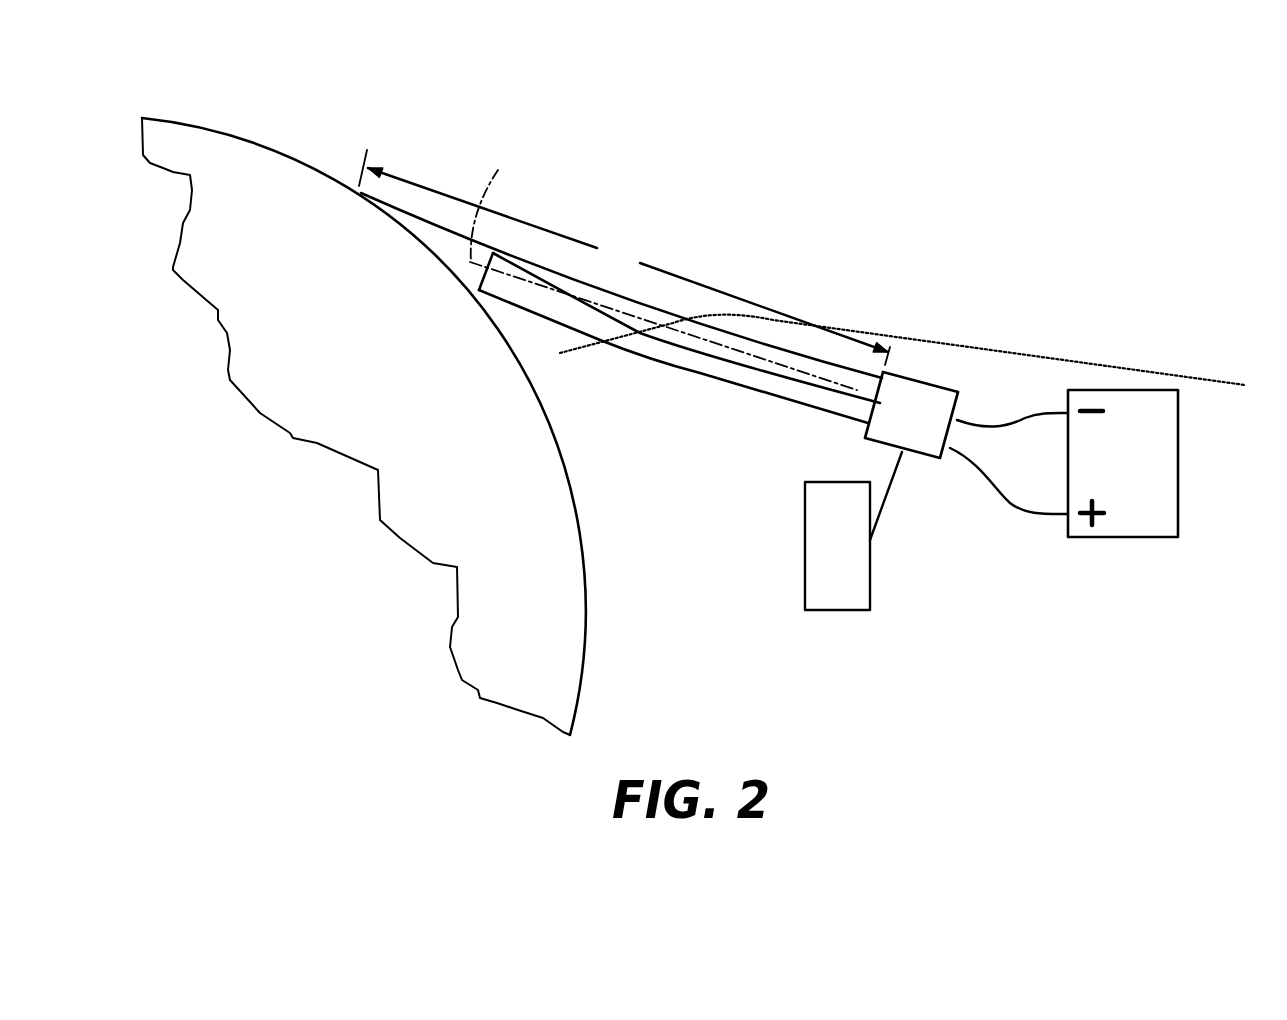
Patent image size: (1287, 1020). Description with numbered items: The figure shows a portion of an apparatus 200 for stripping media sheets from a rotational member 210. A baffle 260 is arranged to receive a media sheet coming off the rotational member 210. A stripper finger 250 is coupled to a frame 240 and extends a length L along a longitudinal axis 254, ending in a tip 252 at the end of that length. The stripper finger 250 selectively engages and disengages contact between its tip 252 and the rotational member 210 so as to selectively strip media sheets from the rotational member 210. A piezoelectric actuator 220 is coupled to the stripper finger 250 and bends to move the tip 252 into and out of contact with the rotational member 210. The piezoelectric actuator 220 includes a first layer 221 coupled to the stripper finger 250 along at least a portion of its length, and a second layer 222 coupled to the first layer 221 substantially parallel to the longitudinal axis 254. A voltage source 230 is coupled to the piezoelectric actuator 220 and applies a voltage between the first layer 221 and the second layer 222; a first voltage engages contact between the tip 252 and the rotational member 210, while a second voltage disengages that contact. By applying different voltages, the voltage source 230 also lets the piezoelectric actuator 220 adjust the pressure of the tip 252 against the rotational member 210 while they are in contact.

The apparatus 200 is at (782, 150).
The rotational member 210 is at (237, 137).
The piezoelectric actuator 220 is at (637, 355).
The first layer 221 is at (768, 365).
The second layer 222 is at (712, 358).
The voltage source 230 is at (1123, 537).
The frame 240 is at (805, 552).
The stripper finger 250 is at (572, 283).
The tip 252 is at (377, 197).
The longitudinal axis 254 is at (505, 199).
The baffle 260 is at (1040, 352).